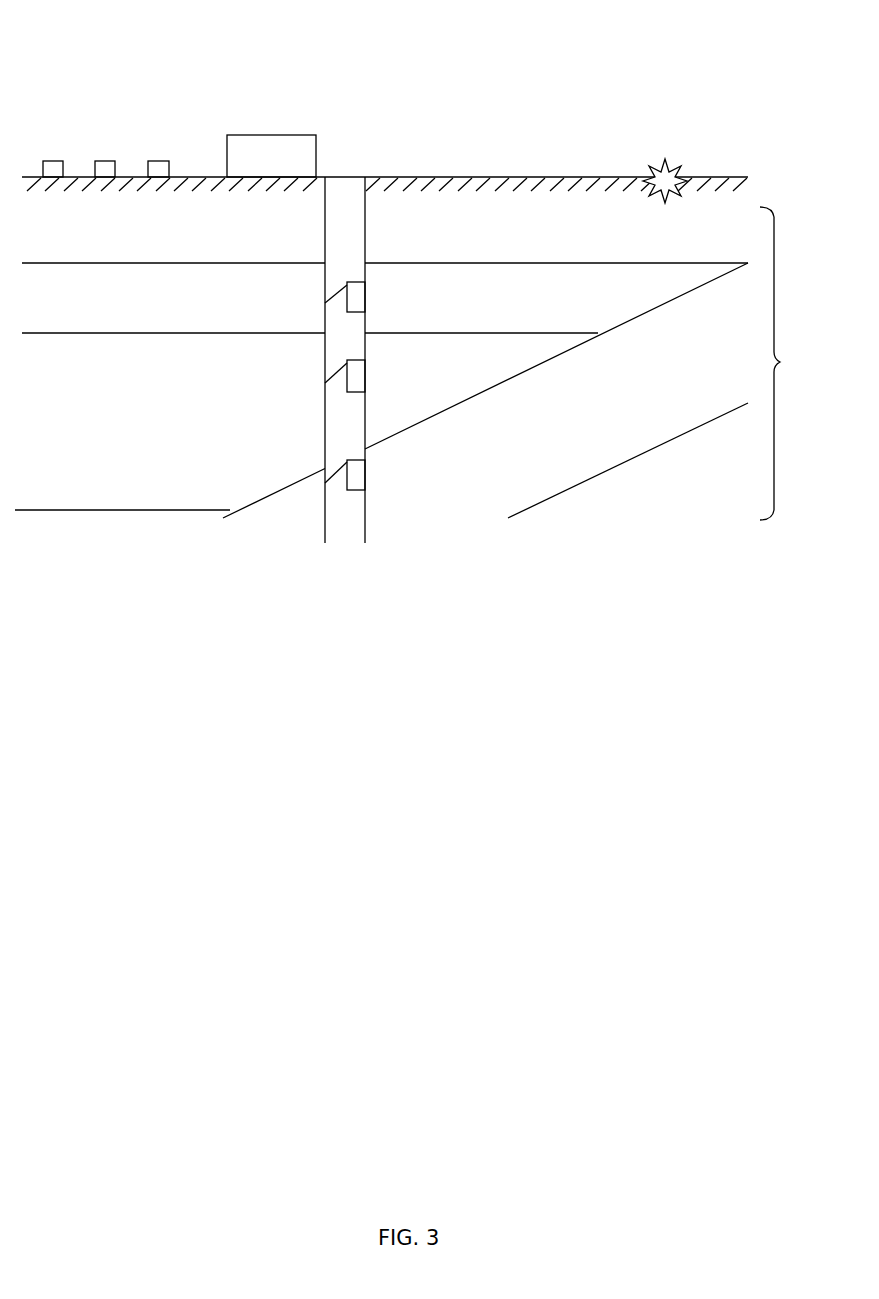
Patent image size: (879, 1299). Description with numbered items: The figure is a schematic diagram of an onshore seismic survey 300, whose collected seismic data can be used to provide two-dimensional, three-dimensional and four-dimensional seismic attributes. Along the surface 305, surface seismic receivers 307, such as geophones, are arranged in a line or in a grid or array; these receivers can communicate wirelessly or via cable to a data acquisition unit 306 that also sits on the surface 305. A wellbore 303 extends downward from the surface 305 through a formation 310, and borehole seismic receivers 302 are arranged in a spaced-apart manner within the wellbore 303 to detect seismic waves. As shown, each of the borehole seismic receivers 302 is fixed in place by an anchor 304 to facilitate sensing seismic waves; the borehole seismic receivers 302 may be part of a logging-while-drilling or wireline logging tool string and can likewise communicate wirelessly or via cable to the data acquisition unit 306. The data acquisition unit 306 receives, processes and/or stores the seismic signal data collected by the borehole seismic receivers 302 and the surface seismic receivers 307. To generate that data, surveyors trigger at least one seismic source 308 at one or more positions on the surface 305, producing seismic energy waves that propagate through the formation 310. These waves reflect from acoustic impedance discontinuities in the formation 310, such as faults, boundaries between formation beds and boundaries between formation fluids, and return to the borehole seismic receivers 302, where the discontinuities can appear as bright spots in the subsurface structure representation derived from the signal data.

The onshore seismic survey 300 is at (580, 90).
The borehole seismic receivers 302 is at (367, 305).
The wellbore 303 is at (386, 232).
The anchors 304 is at (325, 300).
The surface 305 is at (550, 177).
The data acquisition unit 306 is at (248, 135).
The surface seismic receivers 307 is at (52, 161).
The seismic source 308 is at (675, 163).
The formation 310 is at (427, 363).